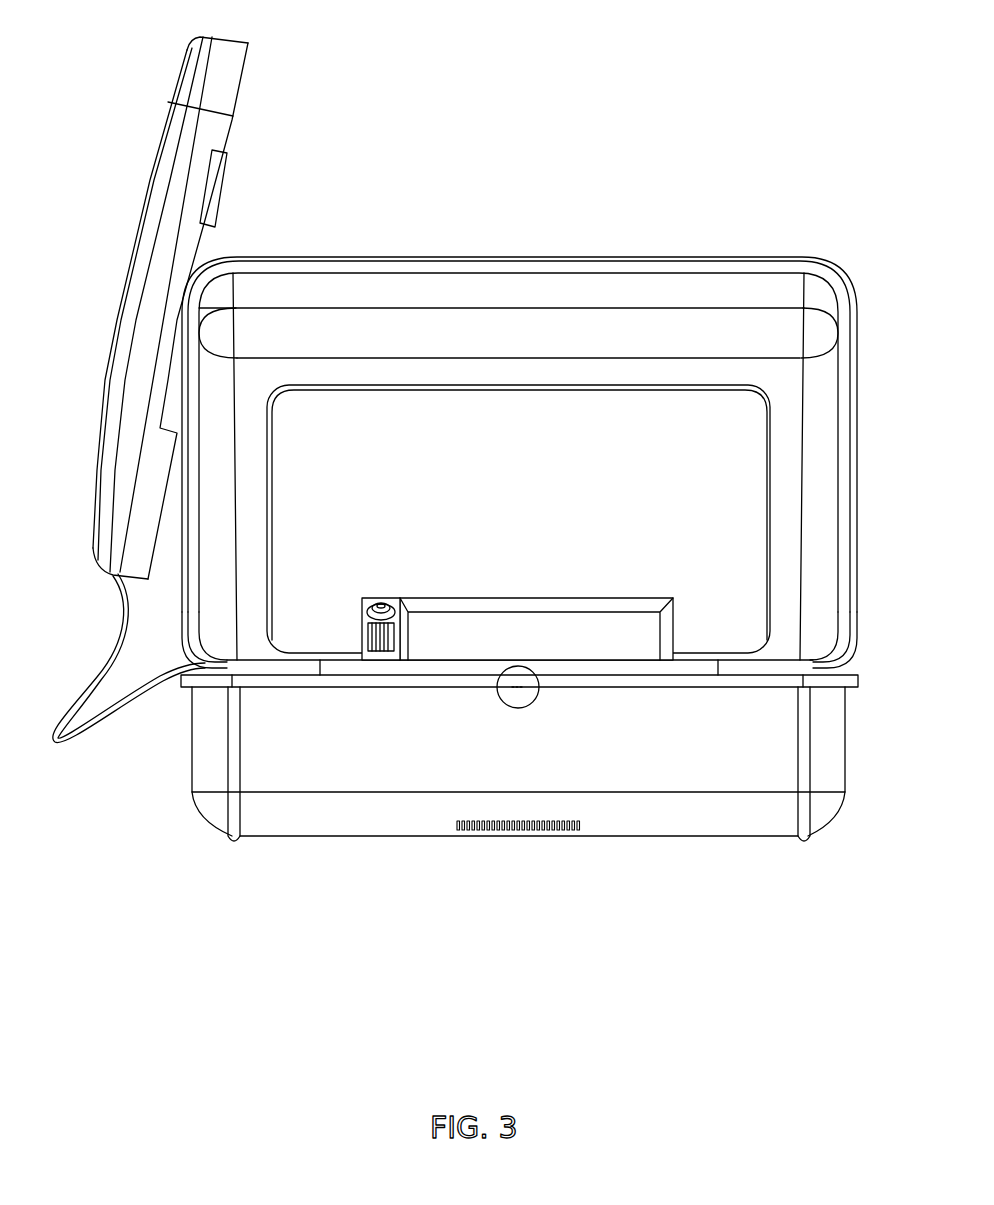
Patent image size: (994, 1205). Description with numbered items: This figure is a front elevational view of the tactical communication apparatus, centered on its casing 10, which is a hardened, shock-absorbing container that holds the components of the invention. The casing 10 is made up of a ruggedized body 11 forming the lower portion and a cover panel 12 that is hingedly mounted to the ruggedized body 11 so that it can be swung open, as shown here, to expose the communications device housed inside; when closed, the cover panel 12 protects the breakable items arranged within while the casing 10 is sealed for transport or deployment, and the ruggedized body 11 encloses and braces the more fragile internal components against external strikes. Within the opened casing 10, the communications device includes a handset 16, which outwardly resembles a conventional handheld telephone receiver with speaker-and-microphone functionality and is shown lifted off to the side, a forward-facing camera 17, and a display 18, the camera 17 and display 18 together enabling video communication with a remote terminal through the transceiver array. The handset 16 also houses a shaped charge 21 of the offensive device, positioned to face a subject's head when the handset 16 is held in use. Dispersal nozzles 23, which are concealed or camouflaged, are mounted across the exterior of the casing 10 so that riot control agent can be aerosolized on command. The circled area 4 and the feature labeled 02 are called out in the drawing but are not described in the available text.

The casing 10 is at (490, 258).
The cover panel 12 is at (770, 444).
The display 18 is at (517, 627).
The shaped charge 21 is at (362, 620).
The forward-facing camera 17 is at (381, 606).
The ruggedized body 11 is at (216, 818).
The vent slots 02 is at (487, 831).
The detail circle 4 is at (498, 703).
The dispersal nozzles 23 is at (145, 193).
The handset 16 is at (215, 135).